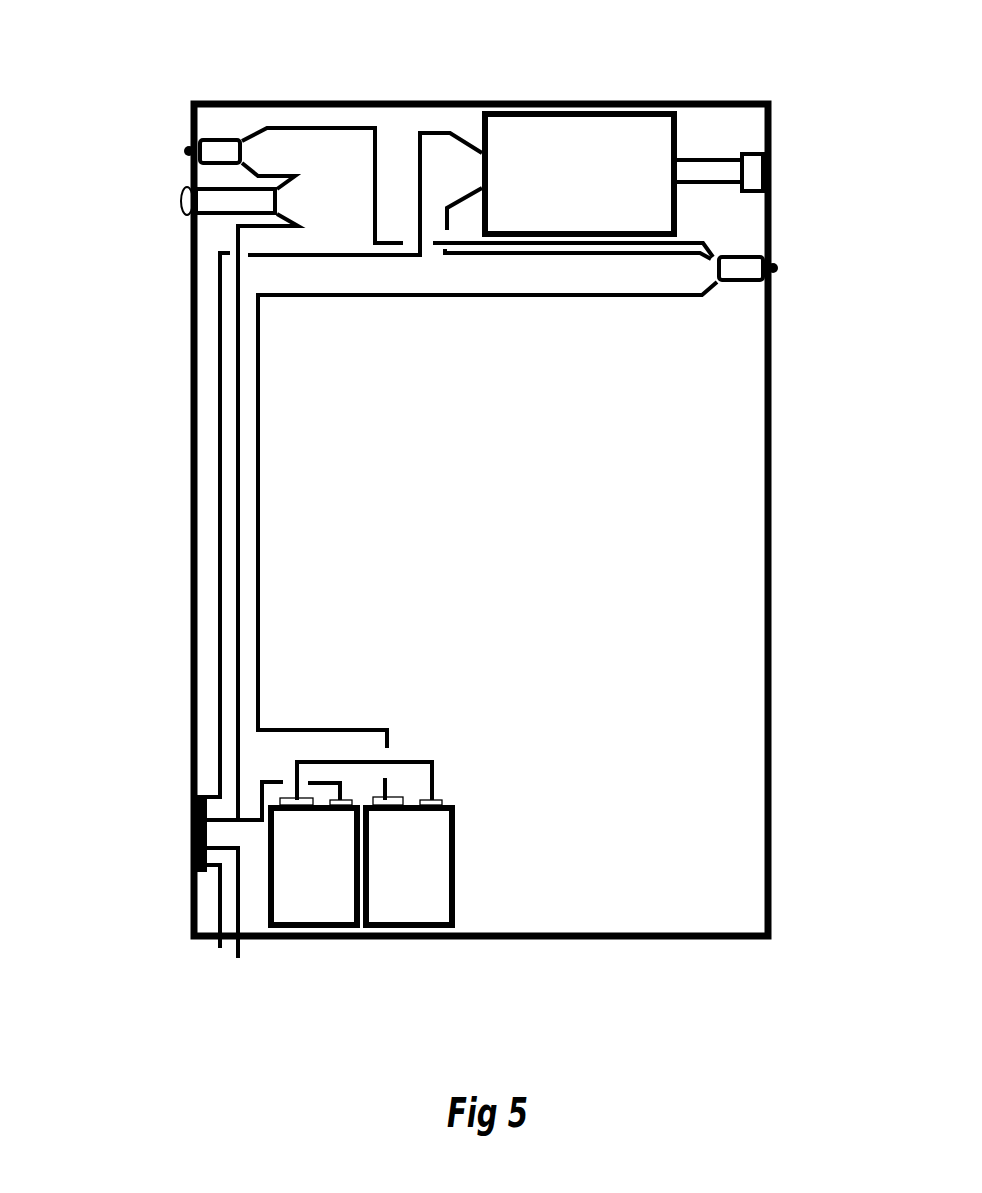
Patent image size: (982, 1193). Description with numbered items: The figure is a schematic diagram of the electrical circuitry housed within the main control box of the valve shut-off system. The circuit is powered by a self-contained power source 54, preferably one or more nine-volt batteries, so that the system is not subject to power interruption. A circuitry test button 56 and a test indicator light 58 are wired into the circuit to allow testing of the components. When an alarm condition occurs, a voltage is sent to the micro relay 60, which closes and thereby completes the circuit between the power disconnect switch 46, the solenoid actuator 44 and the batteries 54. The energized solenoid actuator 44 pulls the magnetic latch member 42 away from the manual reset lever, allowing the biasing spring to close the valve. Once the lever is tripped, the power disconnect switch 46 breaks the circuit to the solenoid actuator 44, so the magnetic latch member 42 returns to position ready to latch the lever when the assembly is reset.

The magnetic latch member 42 is at (752, 172).
The solenoid actuator 44 is at (568, 137).
The power disconnect switch 46 is at (752, 260).
The self-contained power source 54 is at (402, 908).
The circuitry test button 56 is at (210, 148).
The test indicator light 58 is at (183, 193).
The micro relay 60 is at (192, 822).